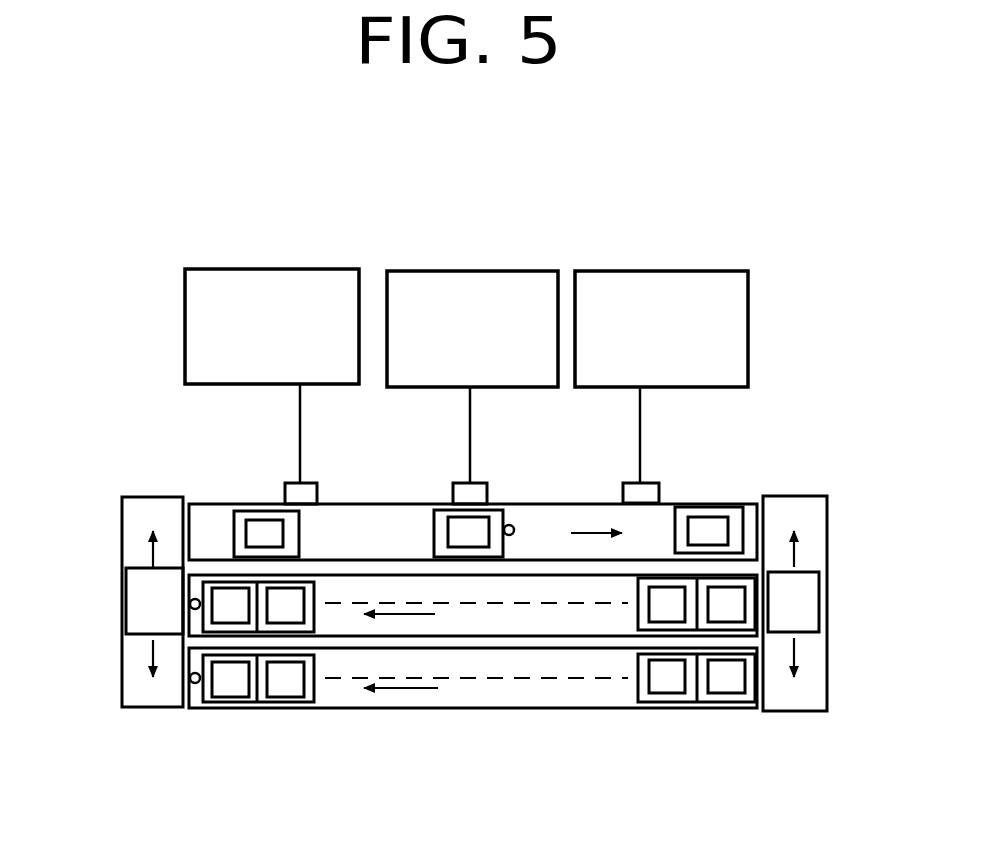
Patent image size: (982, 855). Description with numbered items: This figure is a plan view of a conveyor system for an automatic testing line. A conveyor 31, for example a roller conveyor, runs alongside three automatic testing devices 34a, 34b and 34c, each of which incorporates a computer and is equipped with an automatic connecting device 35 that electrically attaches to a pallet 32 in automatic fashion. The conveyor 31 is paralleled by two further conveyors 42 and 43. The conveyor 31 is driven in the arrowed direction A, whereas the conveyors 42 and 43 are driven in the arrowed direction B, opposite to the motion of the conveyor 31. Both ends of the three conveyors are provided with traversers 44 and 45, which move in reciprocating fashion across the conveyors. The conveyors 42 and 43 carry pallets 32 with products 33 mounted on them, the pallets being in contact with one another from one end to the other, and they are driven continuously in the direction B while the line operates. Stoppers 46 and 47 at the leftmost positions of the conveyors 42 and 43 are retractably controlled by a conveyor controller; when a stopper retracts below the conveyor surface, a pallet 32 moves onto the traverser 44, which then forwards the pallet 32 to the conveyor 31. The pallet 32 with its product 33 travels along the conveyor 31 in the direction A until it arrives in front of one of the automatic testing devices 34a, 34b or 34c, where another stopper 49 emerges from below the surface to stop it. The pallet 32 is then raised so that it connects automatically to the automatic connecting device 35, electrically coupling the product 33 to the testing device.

The conveyor 31 is at (403, 515).
The pallet 32 is at (240, 512).
The product 33 is at (264, 522).
The automatic testing device 34a is at (284, 268).
The automatic testing device 34b is at (467, 270).
The automatic testing device 34c is at (627, 270).
The automatic connecting device 35 is at (313, 484).
The conveyor 42 is at (592, 619).
The conveyor 43 is at (515, 697).
The traverser 44 is at (138, 592).
The traverser 45 is at (812, 597).
The stopper 46 is at (189, 606).
The stopper 47 is at (191, 681).
The stopper 49 is at (514, 530).
The arrowed direction A is at (596, 532).
The arrowed direction B is at (419, 616).